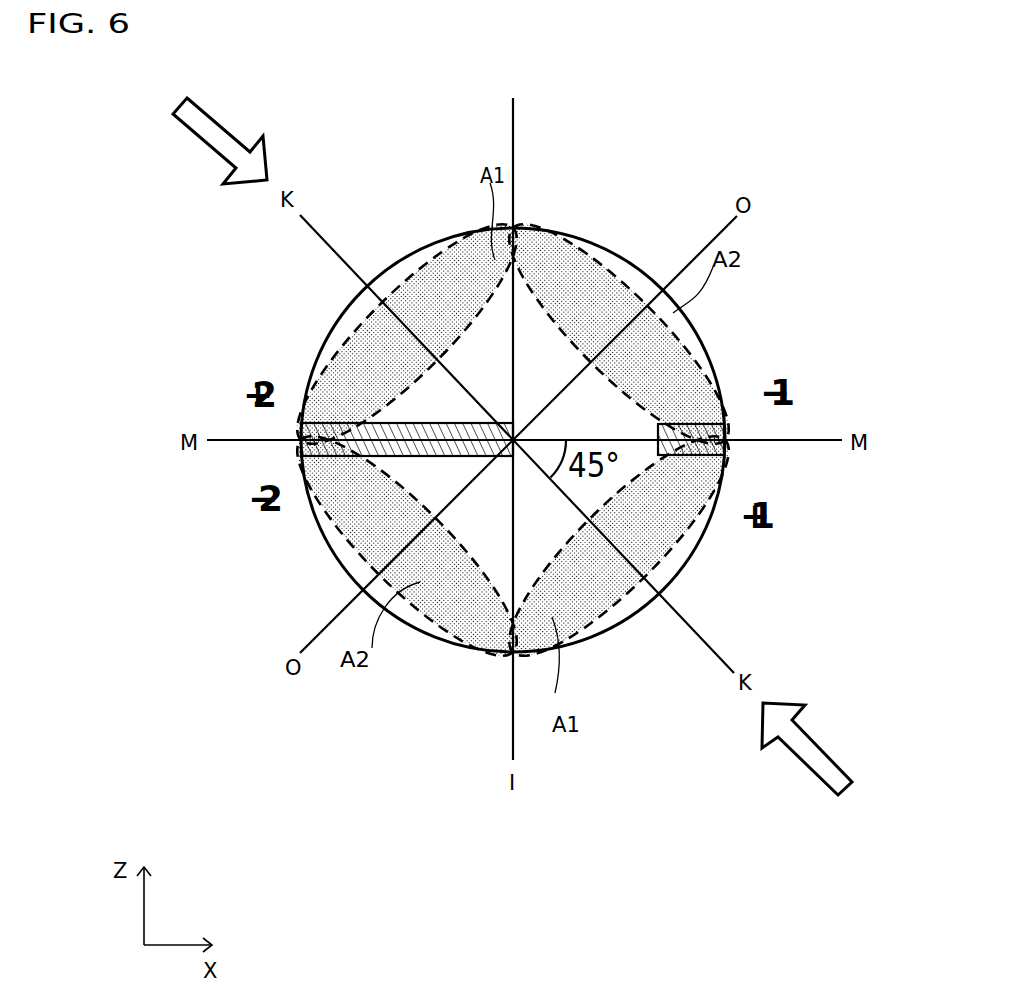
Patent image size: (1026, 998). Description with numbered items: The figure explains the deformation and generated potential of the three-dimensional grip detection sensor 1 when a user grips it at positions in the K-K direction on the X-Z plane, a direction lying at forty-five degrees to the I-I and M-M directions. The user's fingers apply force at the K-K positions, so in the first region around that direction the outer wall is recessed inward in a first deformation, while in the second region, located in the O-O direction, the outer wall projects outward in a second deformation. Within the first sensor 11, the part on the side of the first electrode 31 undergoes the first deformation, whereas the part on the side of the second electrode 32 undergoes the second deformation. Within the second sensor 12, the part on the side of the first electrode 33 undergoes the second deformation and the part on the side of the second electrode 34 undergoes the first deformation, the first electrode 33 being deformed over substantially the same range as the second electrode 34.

The three-dimensional grip detection sensor 1 is at (862, 174).
The first sensor 11 is at (300, 447).
The second sensor 12 is at (723, 447).
The first electrode 31 is at (327, 422).
The second electrode 32 is at (327, 457).
The first electrode 33 is at (702, 423).
The second electrode 34 is at (703, 457).